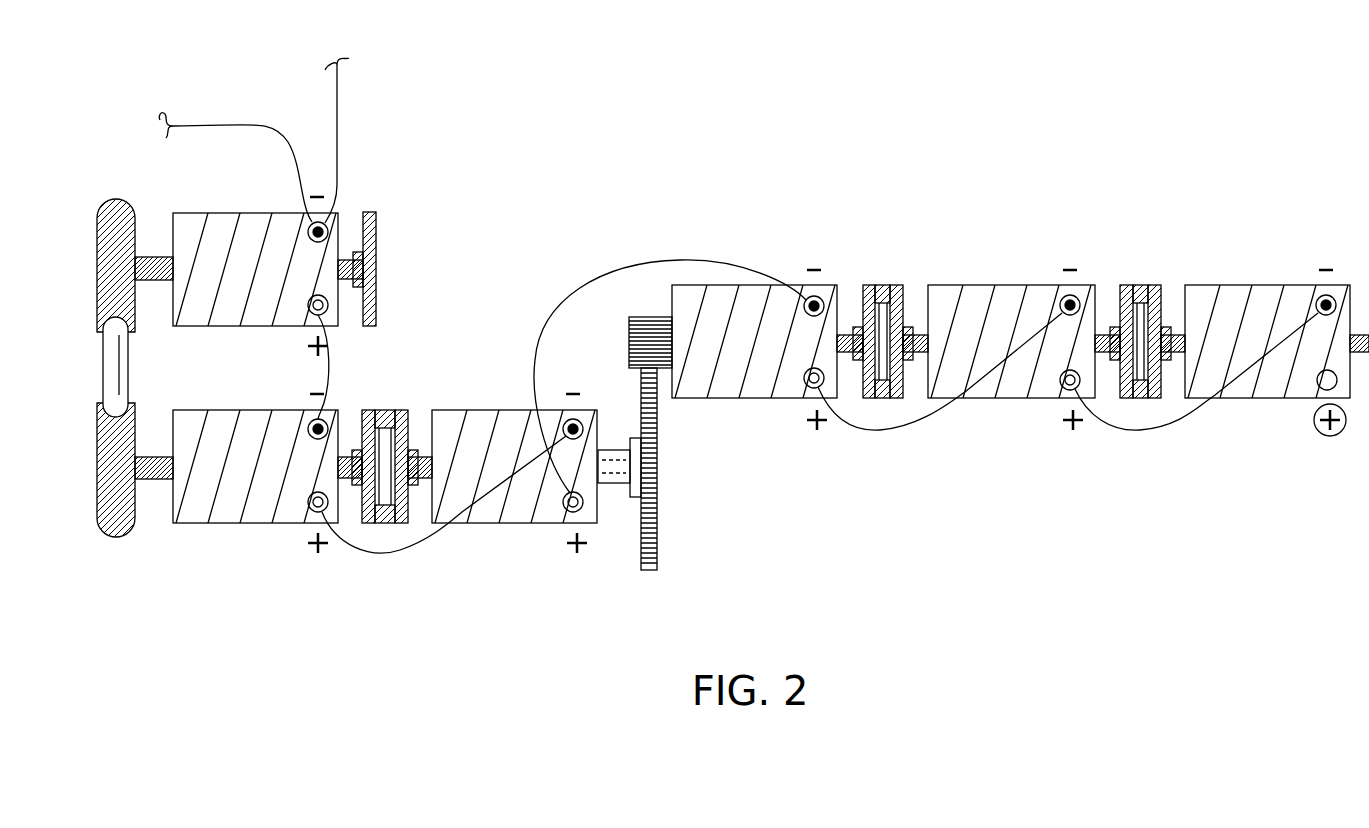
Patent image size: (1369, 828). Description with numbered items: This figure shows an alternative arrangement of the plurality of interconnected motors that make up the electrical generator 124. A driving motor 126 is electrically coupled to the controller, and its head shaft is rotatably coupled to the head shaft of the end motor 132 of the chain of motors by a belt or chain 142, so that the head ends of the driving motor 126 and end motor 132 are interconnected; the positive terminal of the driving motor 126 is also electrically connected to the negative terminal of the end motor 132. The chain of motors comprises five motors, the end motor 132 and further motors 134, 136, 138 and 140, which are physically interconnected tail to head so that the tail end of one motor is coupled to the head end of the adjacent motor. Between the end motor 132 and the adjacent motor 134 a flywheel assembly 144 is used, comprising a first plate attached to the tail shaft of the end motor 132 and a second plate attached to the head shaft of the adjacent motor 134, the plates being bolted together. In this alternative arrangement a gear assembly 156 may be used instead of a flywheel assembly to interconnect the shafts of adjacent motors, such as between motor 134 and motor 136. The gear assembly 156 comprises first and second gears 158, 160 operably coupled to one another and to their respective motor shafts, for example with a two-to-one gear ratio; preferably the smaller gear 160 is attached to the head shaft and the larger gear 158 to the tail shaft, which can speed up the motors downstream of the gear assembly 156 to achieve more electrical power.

The electrical generator 124 is at (1036, 98).
The driving motor 126 is at (256, 222).
The end motor 132 is at (260, 514).
The motor 134 is at (515, 512).
The motor 136 is at (755, 390).
The motor 138 is at (1012, 390).
The motor 140 is at (1268, 390).
The belt or chain 142 is at (98, 293).
The flywheel assembly 144 is at (396, 398).
The gear assembly 156 is at (597, 354).
The first gear 158 is at (658, 540).
The second gear 160 is at (648, 318).